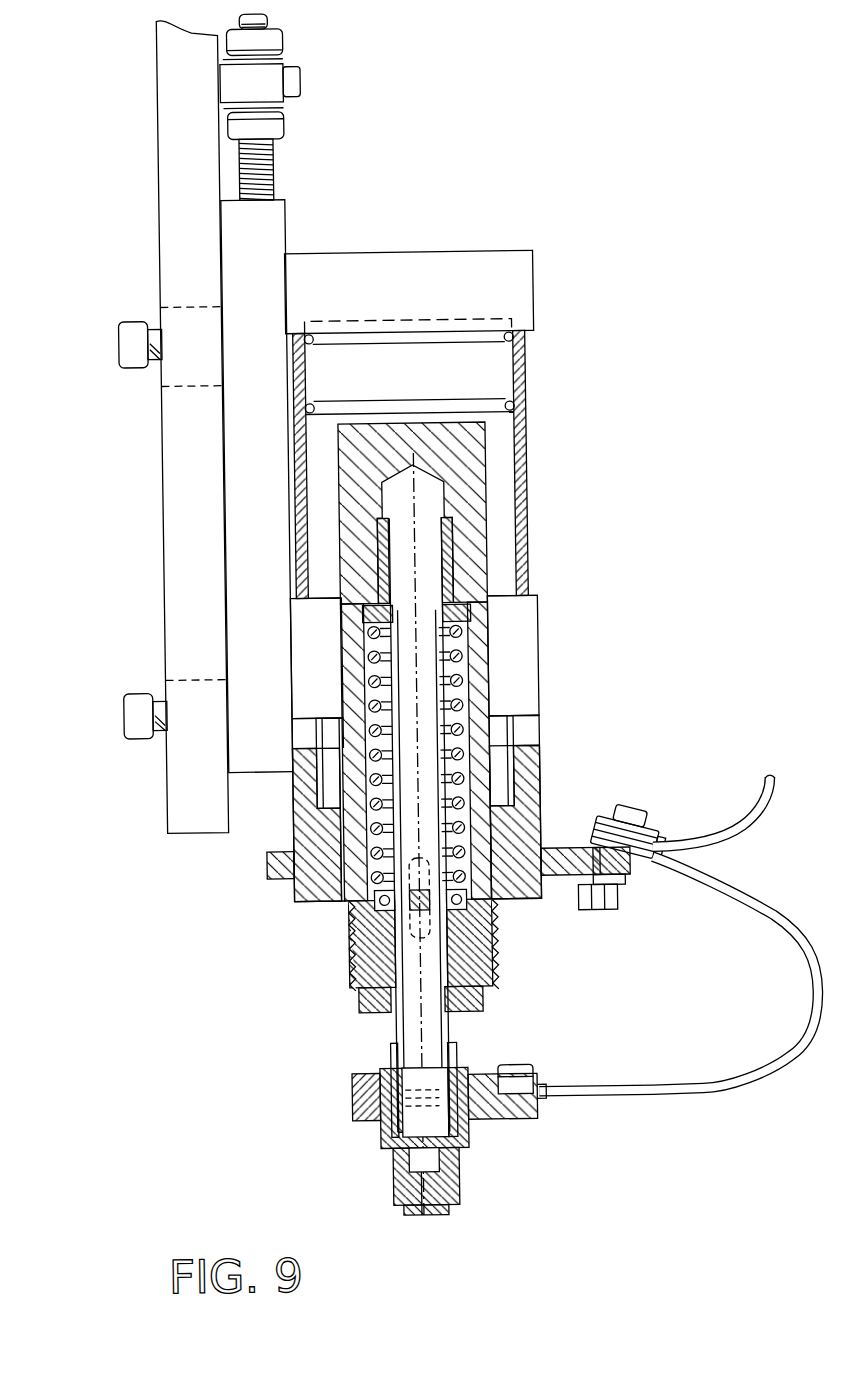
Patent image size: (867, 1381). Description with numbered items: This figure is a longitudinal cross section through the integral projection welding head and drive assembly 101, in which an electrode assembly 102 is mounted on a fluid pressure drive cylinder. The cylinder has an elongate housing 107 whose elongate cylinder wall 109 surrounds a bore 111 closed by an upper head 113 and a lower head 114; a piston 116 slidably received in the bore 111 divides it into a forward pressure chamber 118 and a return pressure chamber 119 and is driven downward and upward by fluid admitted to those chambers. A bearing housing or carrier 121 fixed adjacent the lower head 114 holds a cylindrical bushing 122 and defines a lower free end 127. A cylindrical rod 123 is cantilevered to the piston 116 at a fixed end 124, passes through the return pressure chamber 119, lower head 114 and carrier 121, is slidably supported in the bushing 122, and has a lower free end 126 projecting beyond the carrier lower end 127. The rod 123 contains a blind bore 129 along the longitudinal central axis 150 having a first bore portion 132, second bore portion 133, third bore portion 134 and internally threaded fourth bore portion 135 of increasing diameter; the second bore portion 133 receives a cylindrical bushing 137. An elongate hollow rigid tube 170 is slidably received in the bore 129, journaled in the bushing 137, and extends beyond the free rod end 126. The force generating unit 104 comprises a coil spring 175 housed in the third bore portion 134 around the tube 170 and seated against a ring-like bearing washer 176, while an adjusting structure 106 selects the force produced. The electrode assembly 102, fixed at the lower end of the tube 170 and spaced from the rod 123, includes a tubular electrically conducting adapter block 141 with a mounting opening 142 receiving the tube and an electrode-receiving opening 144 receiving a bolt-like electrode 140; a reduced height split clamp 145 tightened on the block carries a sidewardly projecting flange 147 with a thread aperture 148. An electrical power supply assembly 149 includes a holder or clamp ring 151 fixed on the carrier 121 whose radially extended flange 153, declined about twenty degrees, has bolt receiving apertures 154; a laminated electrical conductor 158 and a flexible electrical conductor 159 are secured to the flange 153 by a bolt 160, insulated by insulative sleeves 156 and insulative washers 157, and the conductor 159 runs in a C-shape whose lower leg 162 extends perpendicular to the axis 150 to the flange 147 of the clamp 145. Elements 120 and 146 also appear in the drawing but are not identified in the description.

The integral projection welding head and drive assembly 101 is at (494, 220).
The electrode assembly 102 is at (364, 1140).
The force generating unit 104 is at (472, 688).
The adjusting structure 106 is at (338, 969).
The elongate housing 107 is at (531, 513).
The elongate cylinder wall 109 is at (519, 487).
The bore 111 is at (514, 447).
The upper head 113 is at (536, 306).
The lower head 114 is at (520, 582).
The piston 116 is at (527, 378).
The forward pressure chamber 118 is at (437, 332).
The return pressure chamber 119 is at (520, 423).
The ball detent 120 is at (478, 906).
The bearing housing or carrier 121 is at (547, 775).
The cylindrical bushing 122 is at (516, 790).
The cylindrical rod 123 is at (528, 548).
The fixed end 124 is at (358, 456).
The lower free end 126 is at (342, 988).
The lower free end 127 is at (291, 900).
The blind bore 129 is at (383, 530).
The first bore portion 132 is at (388, 508).
The second bore portion 133 is at (383, 545).
The third bore portion 134 is at (363, 652).
The fourth bore portion 135 is at (343, 924).
The cylindrical bearing or bushing 137 is at (383, 568).
The electrode 140 is at (412, 1218).
The adapter block 141 is at (376, 1182).
The mounting opening 142 is at (383, 1055).
The electrode-receiving opening 144 is at (438, 1198).
The split clamp 145 is at (344, 1078).
The seal 146 is at (448, 1060).
The flange 147 is at (536, 1096).
The thread aperture 148 is at (530, 1120).
The electrical power supply assembly 149 is at (700, 804).
The longitudinal central axis 150 is at (428, 1220).
The holder or clamp ring 151 is at (262, 866).
The radially extended flange 153 is at (622, 880).
The bolt receiving apertures 154 is at (582, 915).
The insulative sleeves 156 is at (600, 862).
The insulative washers 157 is at (630, 876).
The electrical conductor 158 is at (752, 835).
The flexible electrical conductor 159 is at (688, 1100).
The bolt 160 is at (632, 812).
The lower leg 162 is at (652, 1098).
The hollow rigid tube 170 is at (500, 655).
The spring 175 is at (388, 680).
The bearing washer 176 is at (540, 617).